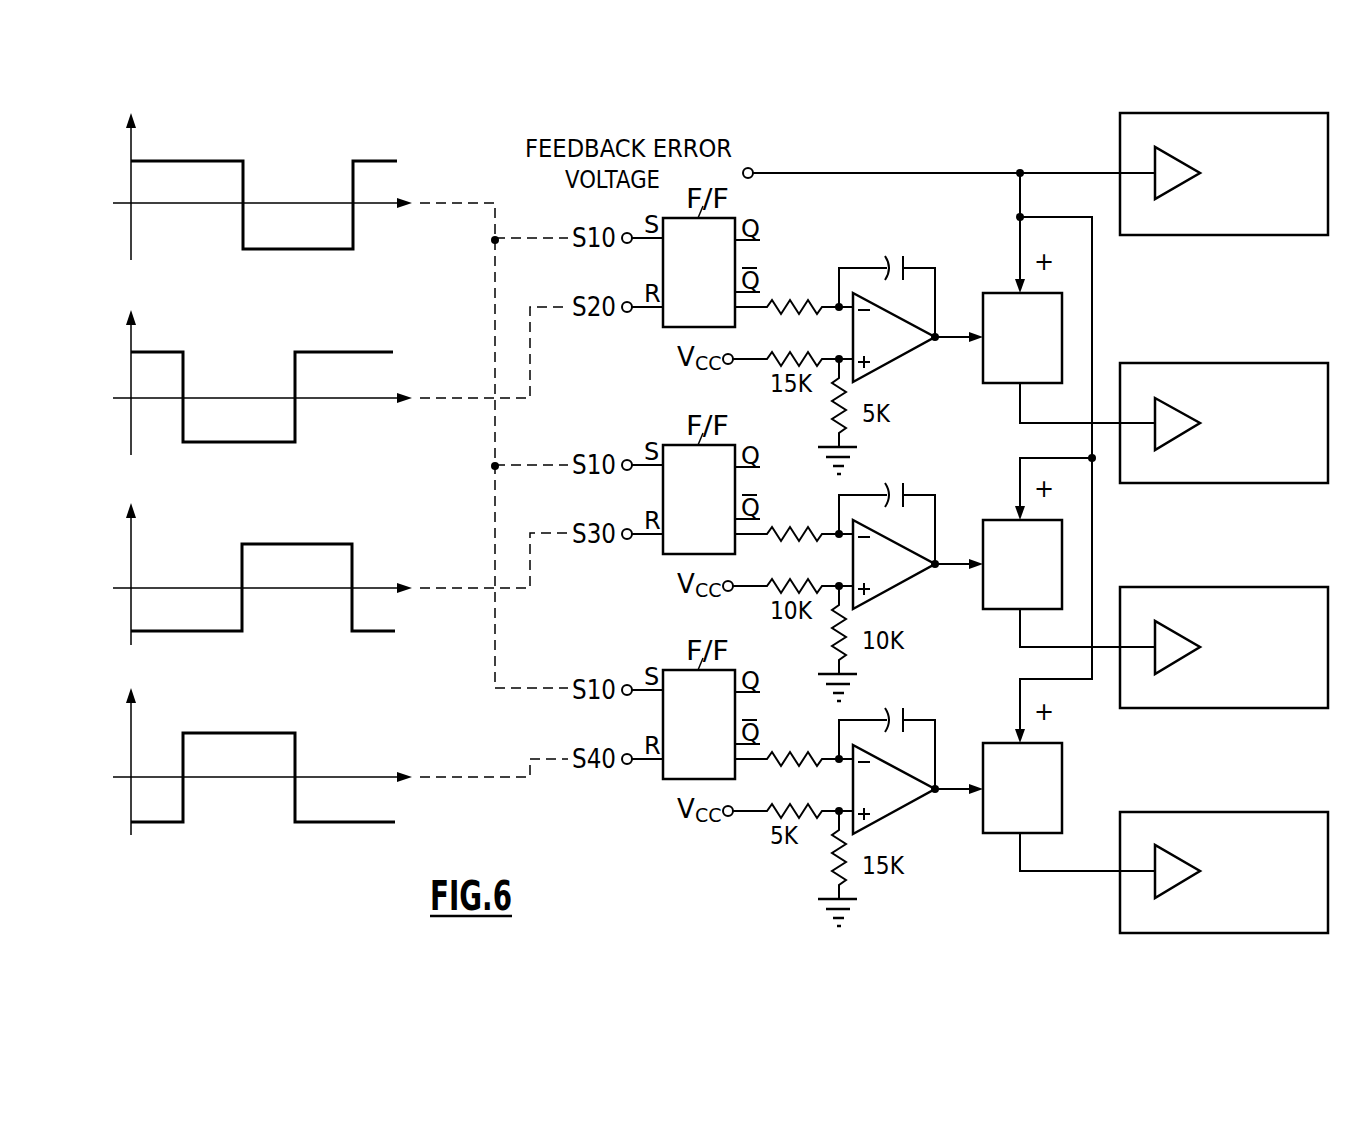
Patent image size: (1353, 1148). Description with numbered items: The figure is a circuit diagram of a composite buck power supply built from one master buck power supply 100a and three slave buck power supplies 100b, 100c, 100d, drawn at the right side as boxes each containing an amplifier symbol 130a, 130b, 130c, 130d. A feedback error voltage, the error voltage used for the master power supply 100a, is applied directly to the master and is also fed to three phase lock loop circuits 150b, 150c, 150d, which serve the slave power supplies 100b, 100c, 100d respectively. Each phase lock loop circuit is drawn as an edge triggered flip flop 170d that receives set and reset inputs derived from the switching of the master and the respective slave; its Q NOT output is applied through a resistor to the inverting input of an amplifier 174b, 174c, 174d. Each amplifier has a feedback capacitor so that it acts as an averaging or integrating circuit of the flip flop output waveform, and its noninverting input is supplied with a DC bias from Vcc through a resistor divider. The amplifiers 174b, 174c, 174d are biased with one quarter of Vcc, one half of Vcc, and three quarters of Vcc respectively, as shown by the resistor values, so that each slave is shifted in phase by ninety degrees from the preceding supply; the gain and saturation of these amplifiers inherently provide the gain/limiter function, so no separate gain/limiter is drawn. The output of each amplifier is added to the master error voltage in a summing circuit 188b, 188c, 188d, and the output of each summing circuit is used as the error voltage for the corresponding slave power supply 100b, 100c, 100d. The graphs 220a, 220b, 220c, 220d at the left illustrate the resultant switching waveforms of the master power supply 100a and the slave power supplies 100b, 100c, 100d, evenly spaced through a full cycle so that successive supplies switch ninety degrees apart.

The master buck power supply 100a is at (1217, 154).
The slave buck power supply 100b is at (1217, 403).
The slave buck power supply 100c is at (1217, 628).
The slave buck power supply 100d is at (1217, 852).
The amplifier of master supply 130a is at (1190, 188).
The amplifier of slave supply 130b is at (1190, 438).
The amplifier of slave supply 130c is at (1190, 662).
The amplifier of slave supply 130d is at (1190, 886).
The phase lock loop circuit 150b is at (659, 336).
The phase lock loop circuit 150c is at (659, 563).
The phase lock loop circuit 150d is at (659, 788).
The edge triggered flip flop 170d is at (658, 508).
The amplifier 174b is at (878, 372).
The amplifier 174c is at (878, 599).
The amplifier 174d is at (878, 824).
The summing circuit 188b is at (1015, 386).
The summing circuit 188c is at (1015, 612).
The summing circuit 188d is at (1015, 836).
The graph 220a is at (372, 141).
The graph 220b is at (356, 338).
The graph 220c is at (372, 529).
The graph 220d is at (316, 718).